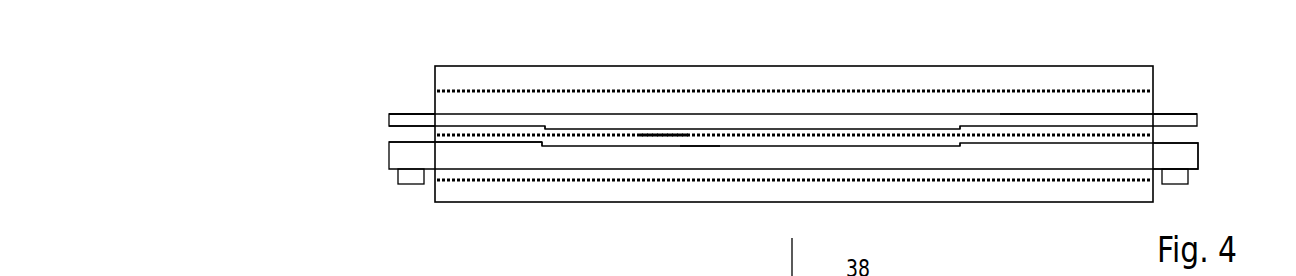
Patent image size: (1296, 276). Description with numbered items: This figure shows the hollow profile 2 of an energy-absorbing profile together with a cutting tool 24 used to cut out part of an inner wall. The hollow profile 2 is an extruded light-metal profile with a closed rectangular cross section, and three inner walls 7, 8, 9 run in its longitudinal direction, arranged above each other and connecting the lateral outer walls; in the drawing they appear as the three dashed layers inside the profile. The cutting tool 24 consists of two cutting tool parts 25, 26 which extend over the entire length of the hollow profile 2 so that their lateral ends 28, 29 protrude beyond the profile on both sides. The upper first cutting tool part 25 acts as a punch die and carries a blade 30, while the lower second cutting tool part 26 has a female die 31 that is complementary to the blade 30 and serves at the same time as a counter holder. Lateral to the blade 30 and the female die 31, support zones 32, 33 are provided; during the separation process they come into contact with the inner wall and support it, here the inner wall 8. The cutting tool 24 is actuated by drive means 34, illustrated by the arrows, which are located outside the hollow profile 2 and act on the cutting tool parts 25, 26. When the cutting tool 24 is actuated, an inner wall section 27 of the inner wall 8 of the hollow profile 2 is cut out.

The hollow profile 2 is at (1021, 62).
The inner wall 7 is at (565, 90).
The inner wall 8 is at (485, 135).
The inner wall 9 is at (608, 182).
The cutting tool 24 is at (1199, 102).
The first cutting tool part 25 is at (1075, 113).
The second cutting tool part 26 is at (1060, 157).
The inner wall section 27 is at (662, 139).
The lateral end 28 is at (1182, 157).
The lateral end 29 is at (389, 114).
The blade 30 is at (705, 128).
The female die 31 is at (697, 147).
The support zone 32 is at (500, 125).
The support zone 33 is at (517, 143).
The drive means 34 is at (789, 63).